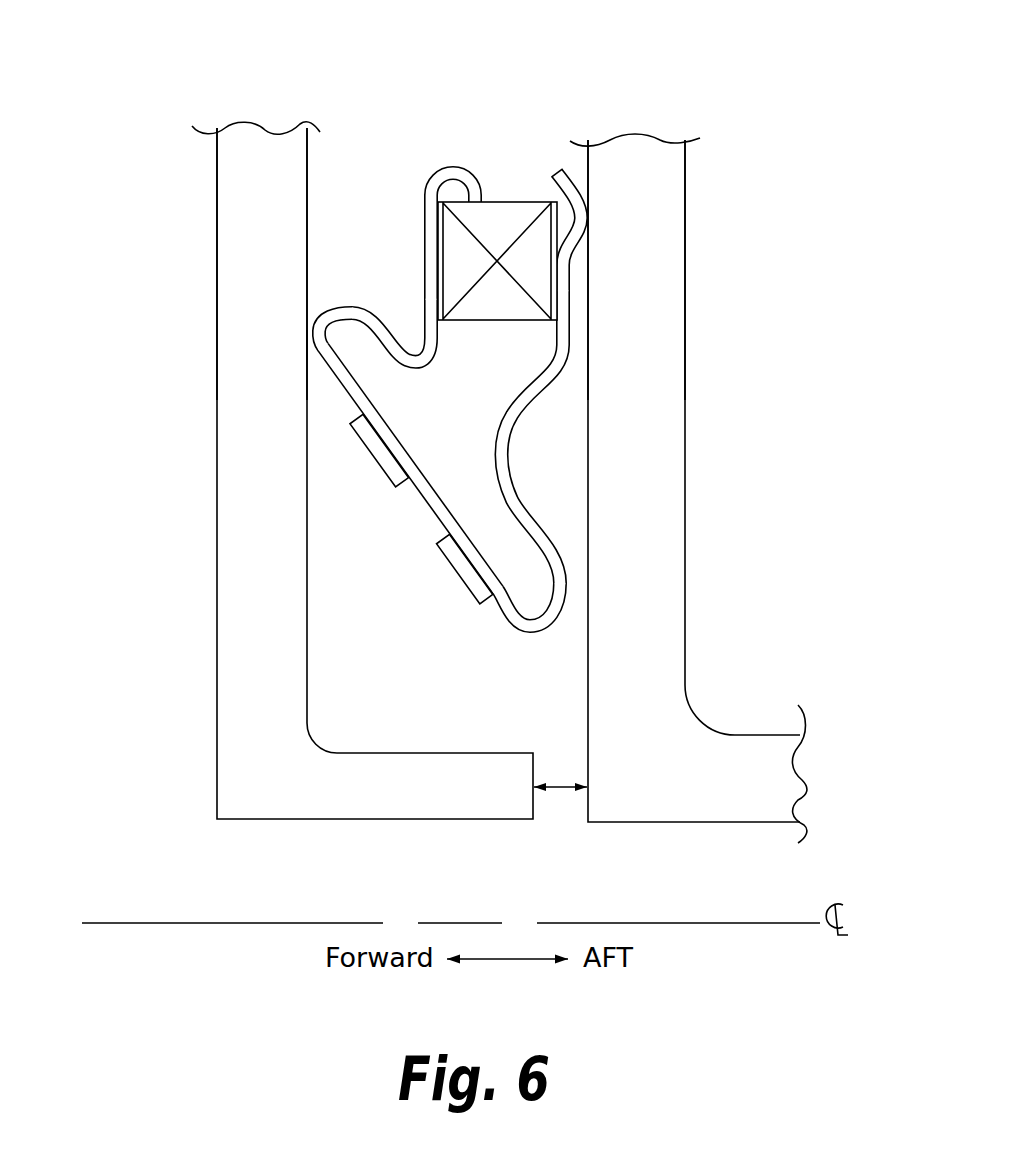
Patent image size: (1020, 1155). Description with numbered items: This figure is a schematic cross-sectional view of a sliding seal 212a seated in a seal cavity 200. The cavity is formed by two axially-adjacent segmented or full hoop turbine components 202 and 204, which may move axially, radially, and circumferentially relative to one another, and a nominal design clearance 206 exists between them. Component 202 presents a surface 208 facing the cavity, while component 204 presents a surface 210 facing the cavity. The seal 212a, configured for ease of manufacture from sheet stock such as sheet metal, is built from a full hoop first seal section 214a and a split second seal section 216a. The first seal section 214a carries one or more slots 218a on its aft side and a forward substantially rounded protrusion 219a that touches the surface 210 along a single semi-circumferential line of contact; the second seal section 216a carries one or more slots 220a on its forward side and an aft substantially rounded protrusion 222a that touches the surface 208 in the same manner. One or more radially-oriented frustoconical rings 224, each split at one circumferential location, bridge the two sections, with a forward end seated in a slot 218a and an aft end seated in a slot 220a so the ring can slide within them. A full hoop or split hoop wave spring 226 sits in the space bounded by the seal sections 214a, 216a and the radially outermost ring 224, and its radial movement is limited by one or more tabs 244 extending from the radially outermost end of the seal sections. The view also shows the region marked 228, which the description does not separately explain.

The seal cavity 200 is at (462, 319).
The turbine component 202 is at (752, 822).
The turbine component 204 is at (243, 820).
The nominal design clearance 206 is at (560, 788).
The surface 208 is at (588, 160).
The surface 210 is at (308, 157).
The seal 212a is at (462, 148).
The first seal section 214a is at (320, 383).
The second seal section 216a is at (574, 318).
The slots 218a is at (330, 345).
The forward substantially rounded protrusion 219a is at (308, 343).
The slots 220a is at (550, 598).
The aft substantially rounded protrusion 222a is at (588, 222).
The frustoconical rings 224 is at (422, 498).
The wave spring 226 is at (437, 245).
The cavity 228 is at (455, 38).
The tabs 244 is at (443, 168).